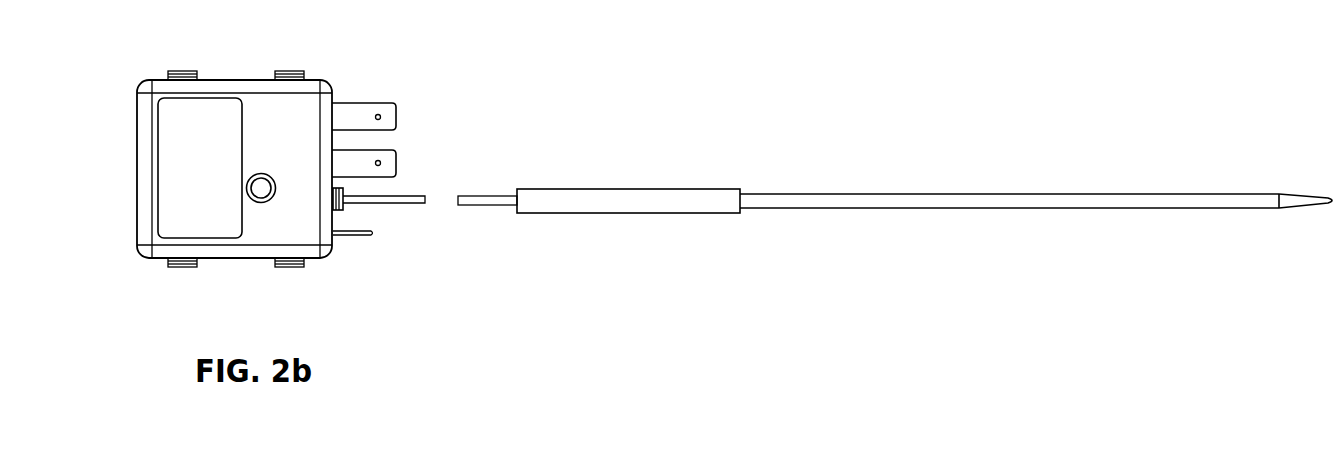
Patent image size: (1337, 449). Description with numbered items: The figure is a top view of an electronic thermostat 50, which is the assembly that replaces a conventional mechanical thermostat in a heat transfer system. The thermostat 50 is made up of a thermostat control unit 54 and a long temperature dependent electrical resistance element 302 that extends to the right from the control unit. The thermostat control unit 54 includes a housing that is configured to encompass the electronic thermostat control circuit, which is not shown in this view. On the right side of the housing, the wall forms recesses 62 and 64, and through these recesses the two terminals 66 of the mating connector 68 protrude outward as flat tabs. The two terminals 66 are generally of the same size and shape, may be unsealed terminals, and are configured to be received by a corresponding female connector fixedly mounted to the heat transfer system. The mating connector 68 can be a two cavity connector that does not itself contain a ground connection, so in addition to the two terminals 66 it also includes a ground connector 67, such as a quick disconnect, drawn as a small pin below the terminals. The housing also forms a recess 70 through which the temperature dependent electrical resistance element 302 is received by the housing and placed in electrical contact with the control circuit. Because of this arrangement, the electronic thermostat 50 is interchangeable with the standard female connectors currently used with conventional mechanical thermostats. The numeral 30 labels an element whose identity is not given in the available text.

The temperature control assembly 30 is at (343, 4).
The electronic thermostat 50 is at (542, 246).
The thermostat control unit 54 is at (126, 260).
The recess 62 is at (354, 114).
The recess 64 is at (335, 165).
The terminals 66 is at (396, 163).
The ground connector 67 is at (360, 237).
The mating connector 68 is at (432, 90).
The recess 70 is at (336, 211).
The temperature dependent electrical resistance element 302 is at (1038, 208).